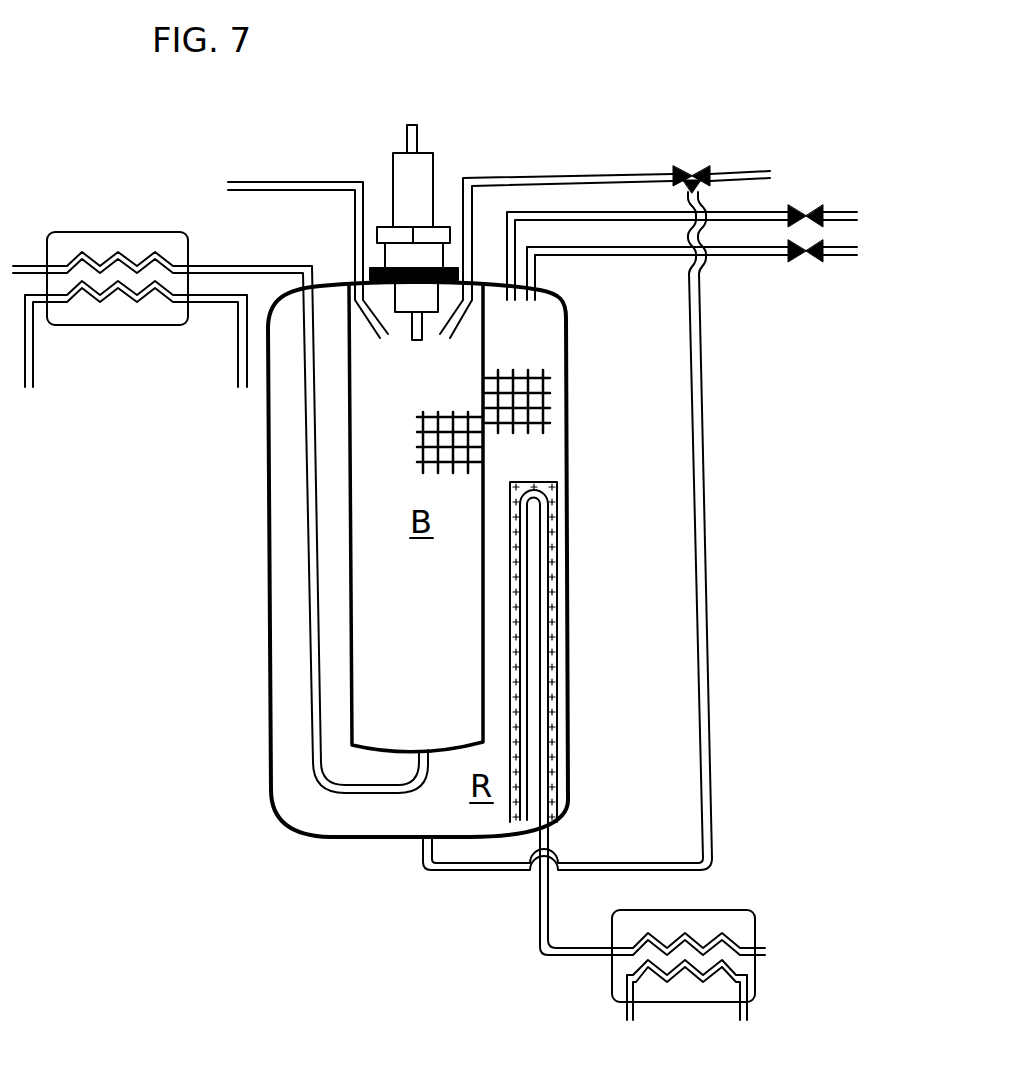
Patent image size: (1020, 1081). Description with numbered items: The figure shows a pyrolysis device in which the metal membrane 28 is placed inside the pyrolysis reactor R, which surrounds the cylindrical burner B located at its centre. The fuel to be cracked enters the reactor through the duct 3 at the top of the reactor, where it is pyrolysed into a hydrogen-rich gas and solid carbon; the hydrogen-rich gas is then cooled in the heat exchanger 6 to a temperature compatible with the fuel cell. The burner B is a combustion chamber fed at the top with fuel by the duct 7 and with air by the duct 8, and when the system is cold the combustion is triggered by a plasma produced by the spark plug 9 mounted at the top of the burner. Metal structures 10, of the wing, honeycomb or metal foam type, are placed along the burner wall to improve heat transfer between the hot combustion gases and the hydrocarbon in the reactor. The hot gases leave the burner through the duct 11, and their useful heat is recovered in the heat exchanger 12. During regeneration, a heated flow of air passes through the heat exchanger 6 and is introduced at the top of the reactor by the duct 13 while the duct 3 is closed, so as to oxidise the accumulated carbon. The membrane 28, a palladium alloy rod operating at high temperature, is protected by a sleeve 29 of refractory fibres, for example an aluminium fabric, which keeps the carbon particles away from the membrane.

The duct 3 is at (733, 210).
The heat exchanger 6 is at (612, 982).
The duct 7 is at (497, 175).
The duct 8 is at (243, 183).
The combustion engine spark plug 9 is at (433, 163).
The metal structures 10 is at (447, 452).
The duct 11 is at (255, 262).
The heat exchanger 12 is at (105, 243).
The duct 13 is at (733, 255).
The metal membrane 28 is at (552, 595).
The sleeve 29 is at (572, 670).